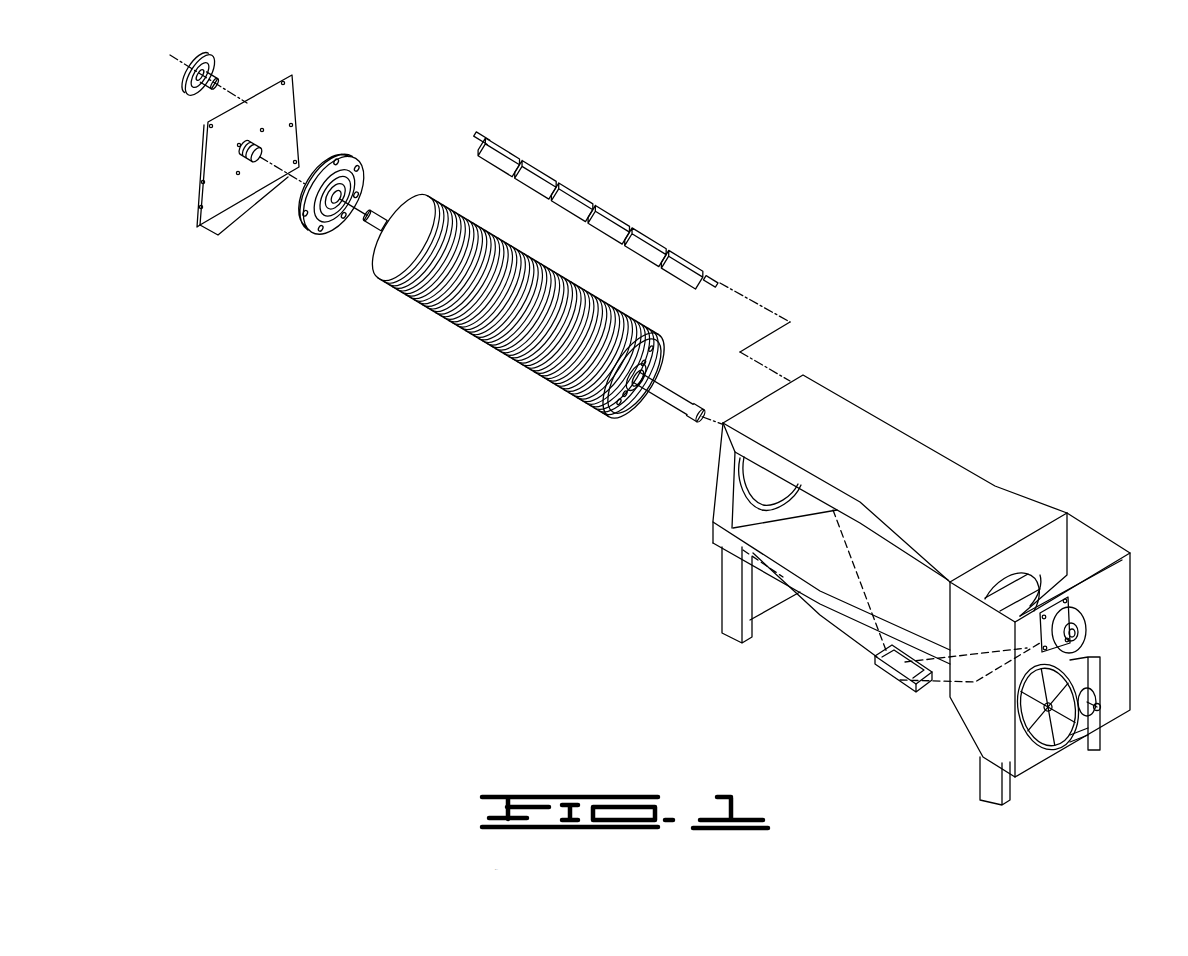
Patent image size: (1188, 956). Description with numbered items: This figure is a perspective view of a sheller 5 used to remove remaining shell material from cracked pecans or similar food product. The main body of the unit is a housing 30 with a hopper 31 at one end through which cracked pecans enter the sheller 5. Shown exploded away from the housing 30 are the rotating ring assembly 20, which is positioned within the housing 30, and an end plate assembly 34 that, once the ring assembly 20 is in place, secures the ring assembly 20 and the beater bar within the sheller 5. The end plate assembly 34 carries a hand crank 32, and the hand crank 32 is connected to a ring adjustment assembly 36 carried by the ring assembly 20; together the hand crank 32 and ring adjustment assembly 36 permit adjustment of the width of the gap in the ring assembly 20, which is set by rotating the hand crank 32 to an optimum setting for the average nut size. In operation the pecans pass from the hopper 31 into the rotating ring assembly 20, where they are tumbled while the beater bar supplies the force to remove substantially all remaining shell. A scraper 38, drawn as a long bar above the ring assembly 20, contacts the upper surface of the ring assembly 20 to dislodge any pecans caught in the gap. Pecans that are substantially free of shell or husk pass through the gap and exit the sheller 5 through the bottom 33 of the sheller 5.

The sheller 5 is at (864, 207).
The ring assembly 20 is at (478, 350).
The housing 30 is at (956, 447).
The hopper 31 is at (1100, 545).
The hand crank 32 is at (183, 80).
The bottom 33 is at (893, 681).
The end plate assembly 34 is at (205, 160).
The ring adjustment assembly 36 is at (346, 168).
The scraper 38 is at (586, 200).